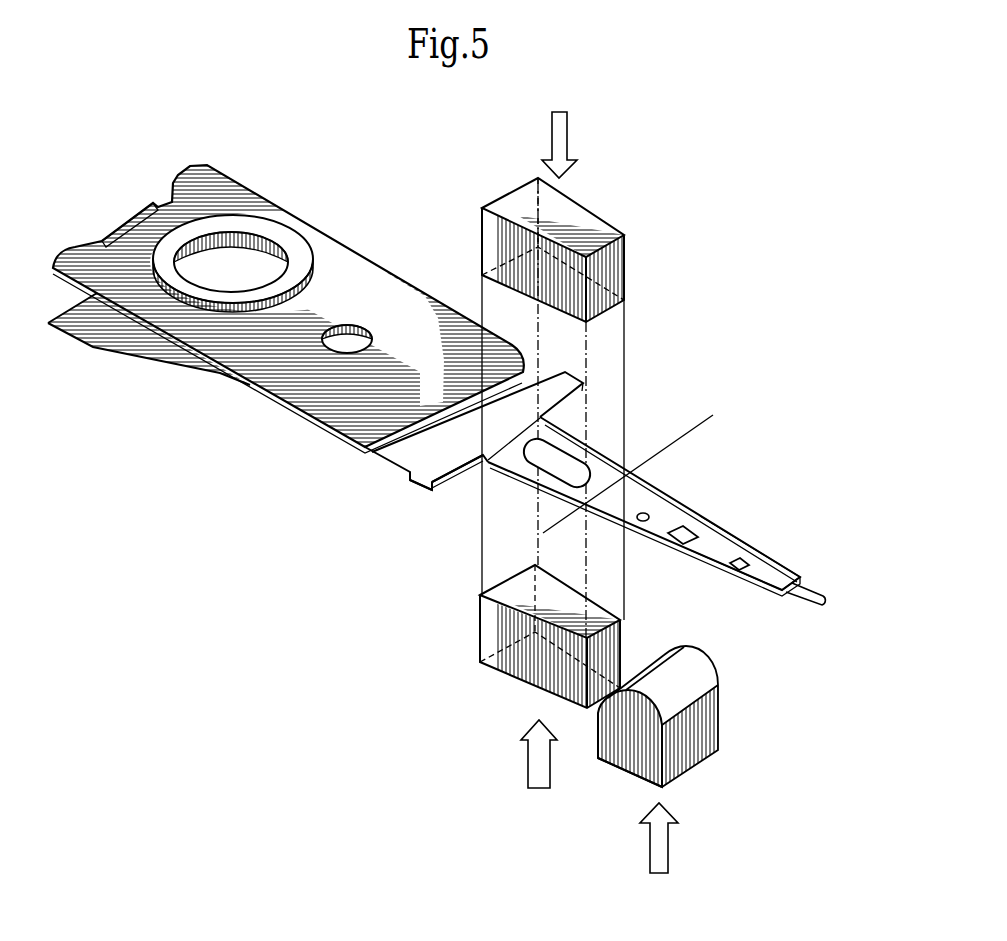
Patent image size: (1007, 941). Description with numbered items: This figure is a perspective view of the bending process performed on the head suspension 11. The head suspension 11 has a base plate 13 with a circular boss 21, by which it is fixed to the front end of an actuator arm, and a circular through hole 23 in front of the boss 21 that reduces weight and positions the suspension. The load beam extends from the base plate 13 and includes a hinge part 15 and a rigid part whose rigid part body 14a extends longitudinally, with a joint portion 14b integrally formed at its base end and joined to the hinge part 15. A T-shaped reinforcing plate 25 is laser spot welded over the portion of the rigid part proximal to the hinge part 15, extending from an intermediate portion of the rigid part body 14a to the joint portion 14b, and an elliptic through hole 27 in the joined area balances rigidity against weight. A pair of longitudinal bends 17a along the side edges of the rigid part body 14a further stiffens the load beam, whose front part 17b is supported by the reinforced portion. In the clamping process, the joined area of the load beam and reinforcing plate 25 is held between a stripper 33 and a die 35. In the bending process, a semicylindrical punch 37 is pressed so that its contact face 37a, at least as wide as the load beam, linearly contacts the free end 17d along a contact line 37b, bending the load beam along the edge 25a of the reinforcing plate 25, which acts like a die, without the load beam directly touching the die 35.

The head suspension 11 is at (766, 170).
The base plate 13 is at (352, 268).
The rigid part body 14a is at (728, 553).
The joint portion 14b is at (416, 486).
The hinge part 15 is at (386, 457).
The longitudinal bend 17a is at (713, 523).
The front part 17b is at (772, 553).
The free end 17d is at (660, 517).
The boss 21 is at (242, 238).
The through hole 23 is at (345, 325).
The reinforcing plate 25 is at (480, 478).
The edge 25a is at (633, 472).
The elliptic through hole 27 is at (610, 455).
The stripper 33 is at (493, 627).
The die 35 is at (605, 230).
The punch 37 is at (717, 697).
The contact face 37a is at (620, 766).
The contact line 37b is at (692, 655).